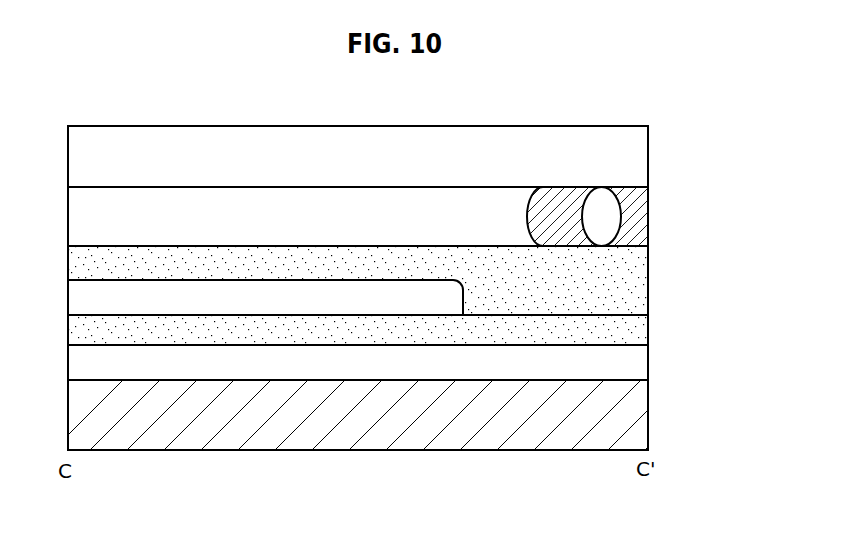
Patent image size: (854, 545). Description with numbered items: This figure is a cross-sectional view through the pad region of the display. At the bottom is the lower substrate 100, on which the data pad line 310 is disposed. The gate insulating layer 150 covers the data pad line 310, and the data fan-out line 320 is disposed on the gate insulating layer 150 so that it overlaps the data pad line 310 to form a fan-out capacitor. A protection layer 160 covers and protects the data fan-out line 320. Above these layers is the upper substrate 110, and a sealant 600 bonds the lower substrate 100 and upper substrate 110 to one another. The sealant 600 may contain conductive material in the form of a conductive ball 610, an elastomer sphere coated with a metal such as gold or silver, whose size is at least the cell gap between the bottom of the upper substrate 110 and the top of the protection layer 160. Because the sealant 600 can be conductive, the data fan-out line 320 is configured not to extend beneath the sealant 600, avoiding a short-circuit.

The lower substrate 100 is at (628, 413).
The upper substrate 110 is at (628, 158).
The gate insulating layer 150 is at (628, 330).
The protection layer 160 is at (628, 283).
The data pad line 310 is at (628, 361).
The data fan-out line 320 is at (240, 300).
The sealant 600 is at (638, 228).
The conductive ball 610 is at (602, 214).